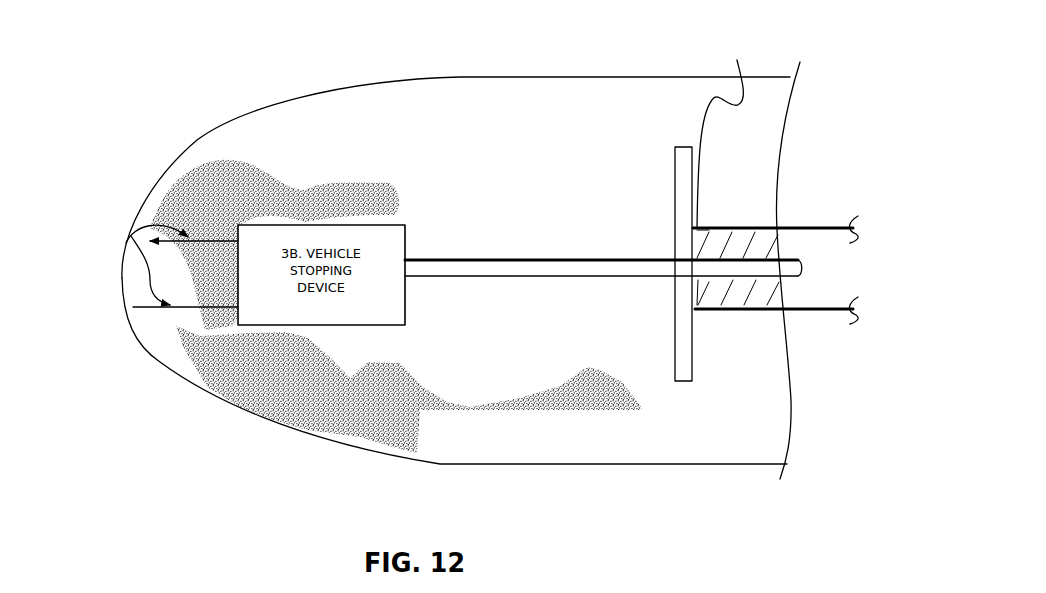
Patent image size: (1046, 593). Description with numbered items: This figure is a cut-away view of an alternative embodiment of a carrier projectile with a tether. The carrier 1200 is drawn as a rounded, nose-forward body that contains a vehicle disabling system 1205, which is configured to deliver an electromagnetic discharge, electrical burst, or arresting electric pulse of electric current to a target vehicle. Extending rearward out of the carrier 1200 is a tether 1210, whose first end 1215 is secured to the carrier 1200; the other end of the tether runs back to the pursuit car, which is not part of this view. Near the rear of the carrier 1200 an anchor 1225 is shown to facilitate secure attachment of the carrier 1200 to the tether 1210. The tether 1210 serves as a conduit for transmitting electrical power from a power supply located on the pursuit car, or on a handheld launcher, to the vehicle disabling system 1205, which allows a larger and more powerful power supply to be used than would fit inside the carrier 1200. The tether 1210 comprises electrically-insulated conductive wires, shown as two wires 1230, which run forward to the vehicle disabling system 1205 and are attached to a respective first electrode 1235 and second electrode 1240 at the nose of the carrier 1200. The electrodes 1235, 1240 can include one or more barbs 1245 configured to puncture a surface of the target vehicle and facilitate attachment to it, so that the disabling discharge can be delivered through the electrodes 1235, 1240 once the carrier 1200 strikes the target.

The carrier 1200 is at (119, 288).
The vehicle disabling system 1205 is at (263, 232).
The tether 1210 is at (797, 228).
The first end 1215 is at (738, 168).
The anchor 1225 is at (682, 167).
The wires 1230 is at (800, 258).
The first electrode 1235 is at (131, 236).
The second electrode 1240 is at (131, 236).
The barbs 1245 is at (152, 306).